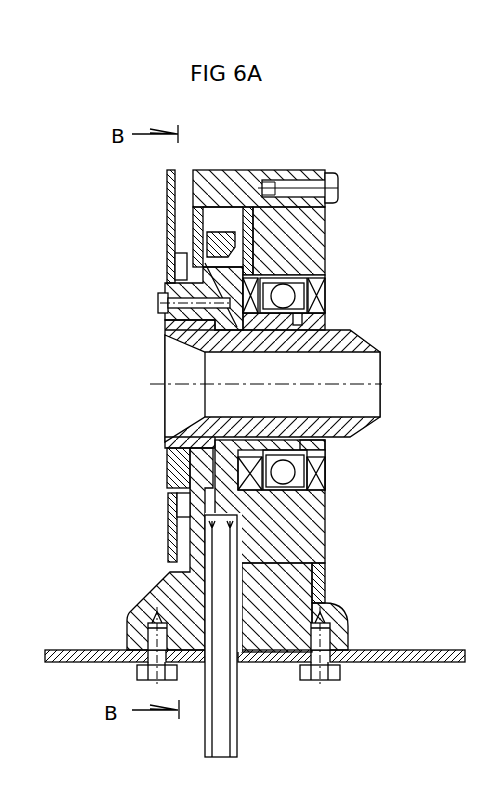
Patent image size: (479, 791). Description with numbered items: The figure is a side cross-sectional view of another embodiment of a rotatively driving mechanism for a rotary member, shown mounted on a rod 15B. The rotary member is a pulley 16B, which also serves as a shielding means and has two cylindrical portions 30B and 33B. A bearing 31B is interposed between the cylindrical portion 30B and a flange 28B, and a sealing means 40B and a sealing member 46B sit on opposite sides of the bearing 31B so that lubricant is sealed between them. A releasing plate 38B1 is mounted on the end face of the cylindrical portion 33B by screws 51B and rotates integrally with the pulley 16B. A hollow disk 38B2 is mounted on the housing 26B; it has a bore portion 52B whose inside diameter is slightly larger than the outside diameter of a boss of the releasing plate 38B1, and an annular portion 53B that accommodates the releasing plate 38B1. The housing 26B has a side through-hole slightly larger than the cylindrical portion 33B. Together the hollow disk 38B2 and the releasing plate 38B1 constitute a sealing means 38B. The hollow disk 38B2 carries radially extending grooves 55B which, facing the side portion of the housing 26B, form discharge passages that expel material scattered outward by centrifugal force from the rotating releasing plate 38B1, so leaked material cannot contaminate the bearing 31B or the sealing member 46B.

The rod 15B is at (220, 722).
The pulley 16B is at (292, 262).
The housing 26B is at (280, 605).
The flange 28B is at (300, 538).
The cylindrical portion 30B is at (325, 443).
The bearing 31B is at (283, 472).
The cylindrical portion 33B is at (185, 253).
The sealing means 38B is at (120, 478).
The releasing plate 38B1 is at (178, 465).
The hollow disk 38B2 is at (143, 496).
The sealing means 40B is at (320, 306).
The sealing member 46B is at (300, 283).
The screws 51B is at (162, 303).
The bore portion 52B is at (170, 283).
The annular portion 53B is at (183, 252).
The grooves 55B is at (185, 183).